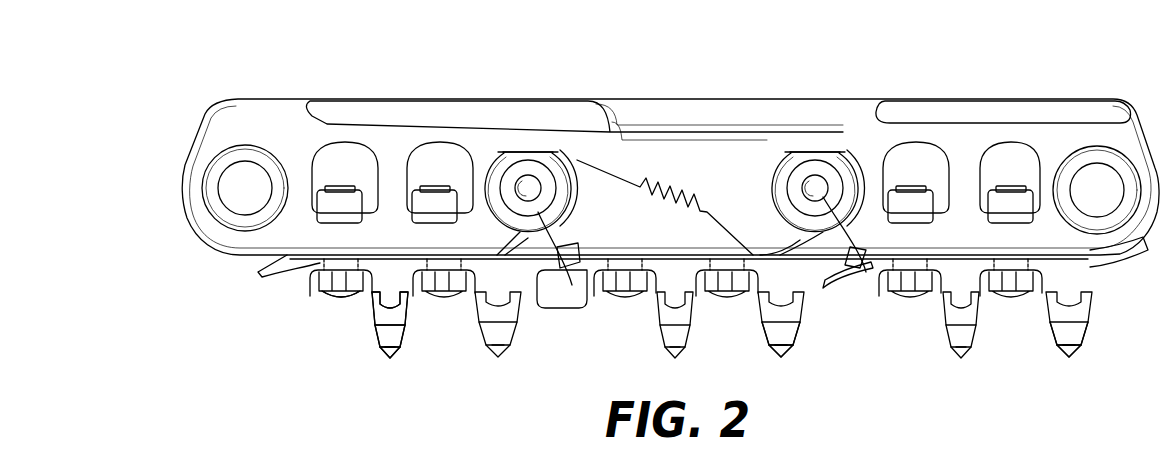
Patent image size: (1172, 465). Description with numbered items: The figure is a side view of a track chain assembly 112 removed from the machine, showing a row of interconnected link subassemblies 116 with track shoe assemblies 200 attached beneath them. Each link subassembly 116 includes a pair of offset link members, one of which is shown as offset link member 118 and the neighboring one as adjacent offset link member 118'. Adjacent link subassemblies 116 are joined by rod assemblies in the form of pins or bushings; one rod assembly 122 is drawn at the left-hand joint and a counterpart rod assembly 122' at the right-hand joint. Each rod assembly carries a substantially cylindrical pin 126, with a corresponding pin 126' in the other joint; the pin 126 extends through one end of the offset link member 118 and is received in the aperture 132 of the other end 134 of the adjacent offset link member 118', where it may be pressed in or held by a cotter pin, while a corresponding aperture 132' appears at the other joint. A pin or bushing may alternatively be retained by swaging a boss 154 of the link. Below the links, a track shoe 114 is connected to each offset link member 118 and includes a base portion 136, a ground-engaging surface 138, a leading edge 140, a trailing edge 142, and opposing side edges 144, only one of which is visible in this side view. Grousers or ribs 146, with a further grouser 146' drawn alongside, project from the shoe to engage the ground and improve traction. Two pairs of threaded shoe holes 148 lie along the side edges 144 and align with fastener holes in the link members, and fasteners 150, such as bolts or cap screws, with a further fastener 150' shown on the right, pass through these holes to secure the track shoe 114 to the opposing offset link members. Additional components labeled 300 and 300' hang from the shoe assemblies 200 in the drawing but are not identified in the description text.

The track chain assembly 112 is at (1053, 80).
The track shoe 114 is at (501, 306).
The link subassembly 116 is at (404, 91).
The offset link member 118 is at (1012, 134).
The adjacent offset link member 118' is at (337, 133).
The rod assembly 122 is at (542, 152).
The pivot boss 122' is at (821, 150).
The pin 126 is at (514, 135).
The pivot bore 126' is at (805, 136).
The aperture 132 is at (578, 274).
The bracket 132' is at (858, 270).
The other end 134 is at (605, 112).
The base portion 136 is at (401, 303).
The ground-engaging surface 138 is at (309, 272).
The leading edge 140 is at (562, 259).
The trailing edge 142 is at (258, 274).
The side edge 144 is at (456, 270).
The grouser 146 is at (406, 337).
The retaining cup 146' is at (524, 318).
The threaded shoe hole 148 is at (433, 270).
The fastener 150 is at (354, 336).
The fastener 150' is at (911, 313).
The boss 154 is at (533, 152).
The track shoe assembly 200 is at (393, 353).
The clip tip 300 is at (786, 391).
The clip tip 300' is at (689, 389).